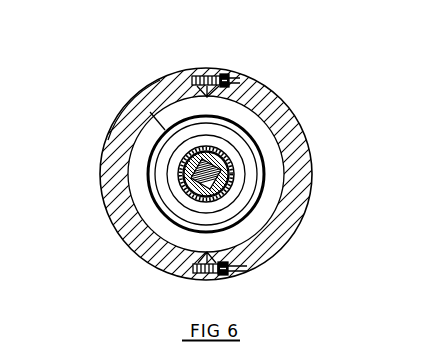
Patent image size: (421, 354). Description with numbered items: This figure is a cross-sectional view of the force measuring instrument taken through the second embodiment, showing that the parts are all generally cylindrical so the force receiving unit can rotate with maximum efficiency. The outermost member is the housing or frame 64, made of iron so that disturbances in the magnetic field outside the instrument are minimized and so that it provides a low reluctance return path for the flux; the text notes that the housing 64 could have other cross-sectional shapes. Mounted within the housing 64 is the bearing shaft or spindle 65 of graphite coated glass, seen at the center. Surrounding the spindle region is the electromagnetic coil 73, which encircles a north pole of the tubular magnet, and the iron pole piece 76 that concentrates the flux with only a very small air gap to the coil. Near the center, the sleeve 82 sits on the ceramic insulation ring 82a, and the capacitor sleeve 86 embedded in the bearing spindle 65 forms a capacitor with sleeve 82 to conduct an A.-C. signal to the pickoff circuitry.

The cylindrical housing 64 is at (196, 78).
The bearing spindle 65 is at (212, 172).
The electromagnetic coil 73 is at (240, 118).
The iron pole piece 76 is at (235, 141).
The ceramic insulation ring 82a is at (229, 163).
The sleeve 82 is at (231, 170).
The capacitor sleeve 86 is at (228, 181).